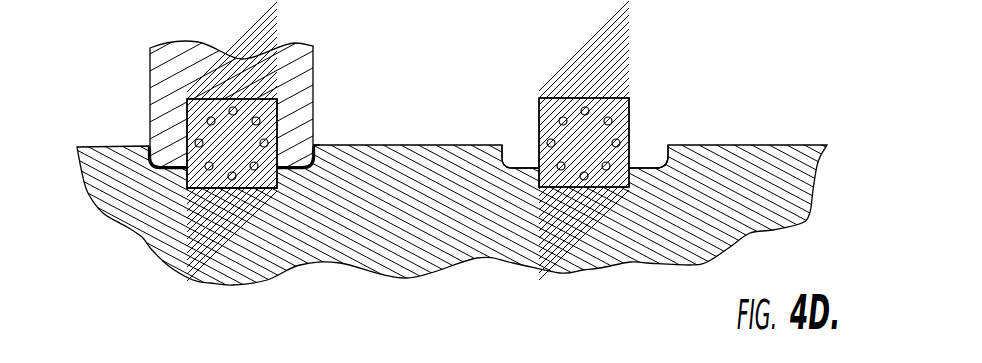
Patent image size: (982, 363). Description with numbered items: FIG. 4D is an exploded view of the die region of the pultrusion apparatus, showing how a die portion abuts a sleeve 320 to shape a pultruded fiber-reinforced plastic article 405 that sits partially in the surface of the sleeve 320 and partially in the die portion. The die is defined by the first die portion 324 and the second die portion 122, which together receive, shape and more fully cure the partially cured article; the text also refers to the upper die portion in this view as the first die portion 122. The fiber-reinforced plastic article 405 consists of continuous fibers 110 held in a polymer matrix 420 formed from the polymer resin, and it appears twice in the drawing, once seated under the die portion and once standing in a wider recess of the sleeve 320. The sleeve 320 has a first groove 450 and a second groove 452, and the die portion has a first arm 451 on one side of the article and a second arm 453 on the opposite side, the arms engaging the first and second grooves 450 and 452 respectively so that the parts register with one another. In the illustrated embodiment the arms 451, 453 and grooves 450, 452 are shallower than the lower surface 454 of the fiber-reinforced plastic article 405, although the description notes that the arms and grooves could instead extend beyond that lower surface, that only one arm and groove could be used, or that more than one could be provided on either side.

The second die portion 122 is at (313, 50).
The sleeve 320 is at (452, 102).
The first die portion 324 is at (187, 188).
The fiber-reinforced plastic article 405 is at (278, 100).
The continuous fibers 110 is at (232, 180).
The polymer matrix 420 is at (197, 105).
The first groove 450 is at (145, 158).
The first arm 451 is at (160, 146).
The second groove 452 is at (314, 147).
The second arm 453 is at (302, 157).
The lower surface 454 is at (266, 200).